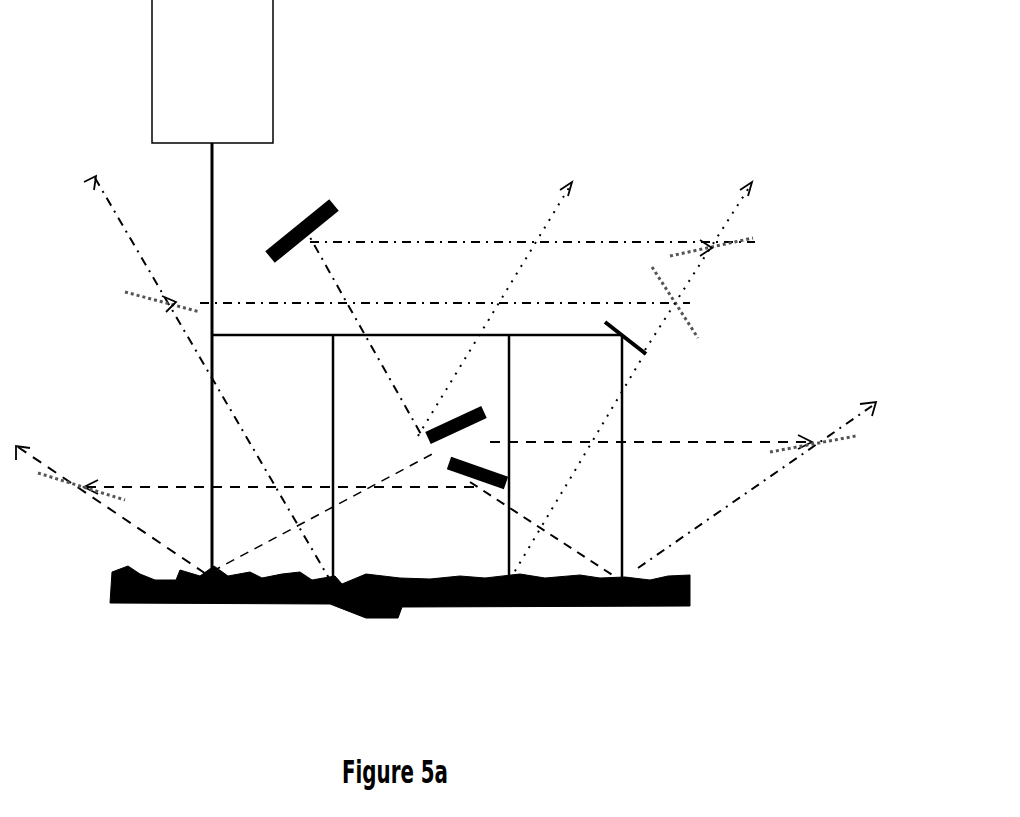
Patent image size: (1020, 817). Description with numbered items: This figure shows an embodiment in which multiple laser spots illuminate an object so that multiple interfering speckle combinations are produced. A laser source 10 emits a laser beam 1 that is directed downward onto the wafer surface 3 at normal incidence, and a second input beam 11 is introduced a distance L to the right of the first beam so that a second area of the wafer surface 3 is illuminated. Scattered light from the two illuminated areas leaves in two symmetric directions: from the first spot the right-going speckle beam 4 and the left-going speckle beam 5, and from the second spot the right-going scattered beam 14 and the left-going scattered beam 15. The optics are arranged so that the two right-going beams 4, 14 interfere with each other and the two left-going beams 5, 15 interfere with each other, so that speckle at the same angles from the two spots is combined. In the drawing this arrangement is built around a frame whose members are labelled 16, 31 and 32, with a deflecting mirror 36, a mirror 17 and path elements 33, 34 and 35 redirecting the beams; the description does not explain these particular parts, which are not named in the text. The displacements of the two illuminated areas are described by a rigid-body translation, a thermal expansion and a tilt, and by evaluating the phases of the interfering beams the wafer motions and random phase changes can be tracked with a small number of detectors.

The laser source 10 is at (148, 62).
The laser beam 1 is at (227, 387).
The beam guide frame 16 is at (257, 357).
The first partition wall 31 is at (350, 348).
The second partition wall 32 is at (545, 370).
The second input beam 11 is at (647, 456).
The deflecting mirror 36 is at (310, 200).
The reflection path element 35 is at (762, 230).
The reflection path element 33 is at (110, 291).
The reflection path element 34 is at (692, 315).
The mirror 17 is at (600, 323).
The left going scattered beam 15 is at (425, 525).
The speckle beam 5 is at (85, 477).
The speckle beam 4 is at (248, 566).
The right going scattered beam 14 is at (720, 517).
The wafer surface 3 is at (700, 582).